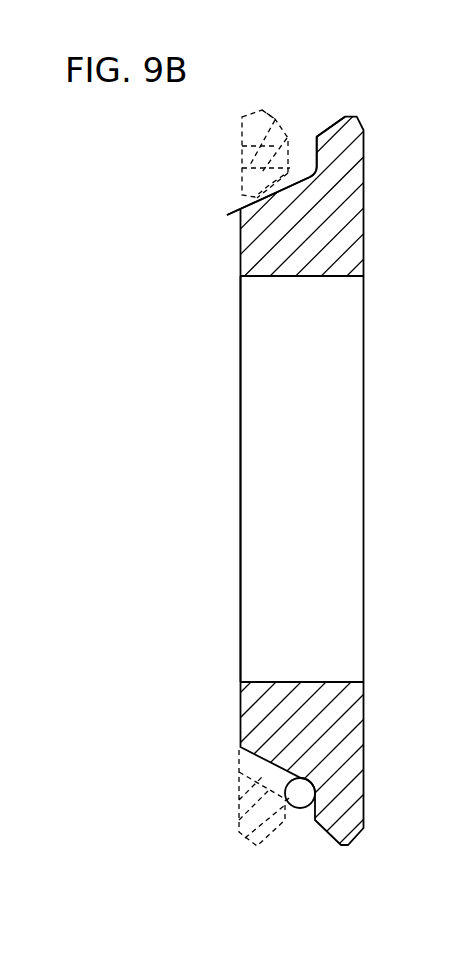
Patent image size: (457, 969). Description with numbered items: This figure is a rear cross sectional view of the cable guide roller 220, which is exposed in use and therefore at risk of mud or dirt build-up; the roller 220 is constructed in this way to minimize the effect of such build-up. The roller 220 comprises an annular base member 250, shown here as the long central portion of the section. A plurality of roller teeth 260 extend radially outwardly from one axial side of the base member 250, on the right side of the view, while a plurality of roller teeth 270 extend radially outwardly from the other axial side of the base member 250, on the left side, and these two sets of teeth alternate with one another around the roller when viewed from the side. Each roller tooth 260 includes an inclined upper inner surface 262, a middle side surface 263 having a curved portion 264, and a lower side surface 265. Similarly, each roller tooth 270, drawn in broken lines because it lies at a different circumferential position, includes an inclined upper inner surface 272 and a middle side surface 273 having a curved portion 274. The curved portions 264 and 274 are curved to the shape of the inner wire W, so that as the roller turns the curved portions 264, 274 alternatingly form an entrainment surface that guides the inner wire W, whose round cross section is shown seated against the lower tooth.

The roller 220 is at (360, 242).
The annular base member 250 is at (296, 260).
The roller teeth 260 is at (364, 134).
The inclined upper inner surface 262 is at (331, 126).
The middle side surface 263 is at (317, 136).
The curved portion 264 is at (309, 174).
The lower side surface 265 is at (252, 197).
The roller teeth 270 is at (272, 136).
The inclined upper inner surface 272 is at (277, 117).
The middle side surface 273 is at (242, 146).
The curved portion 274 is at (242, 168).
The inner wire W is at (300, 797).